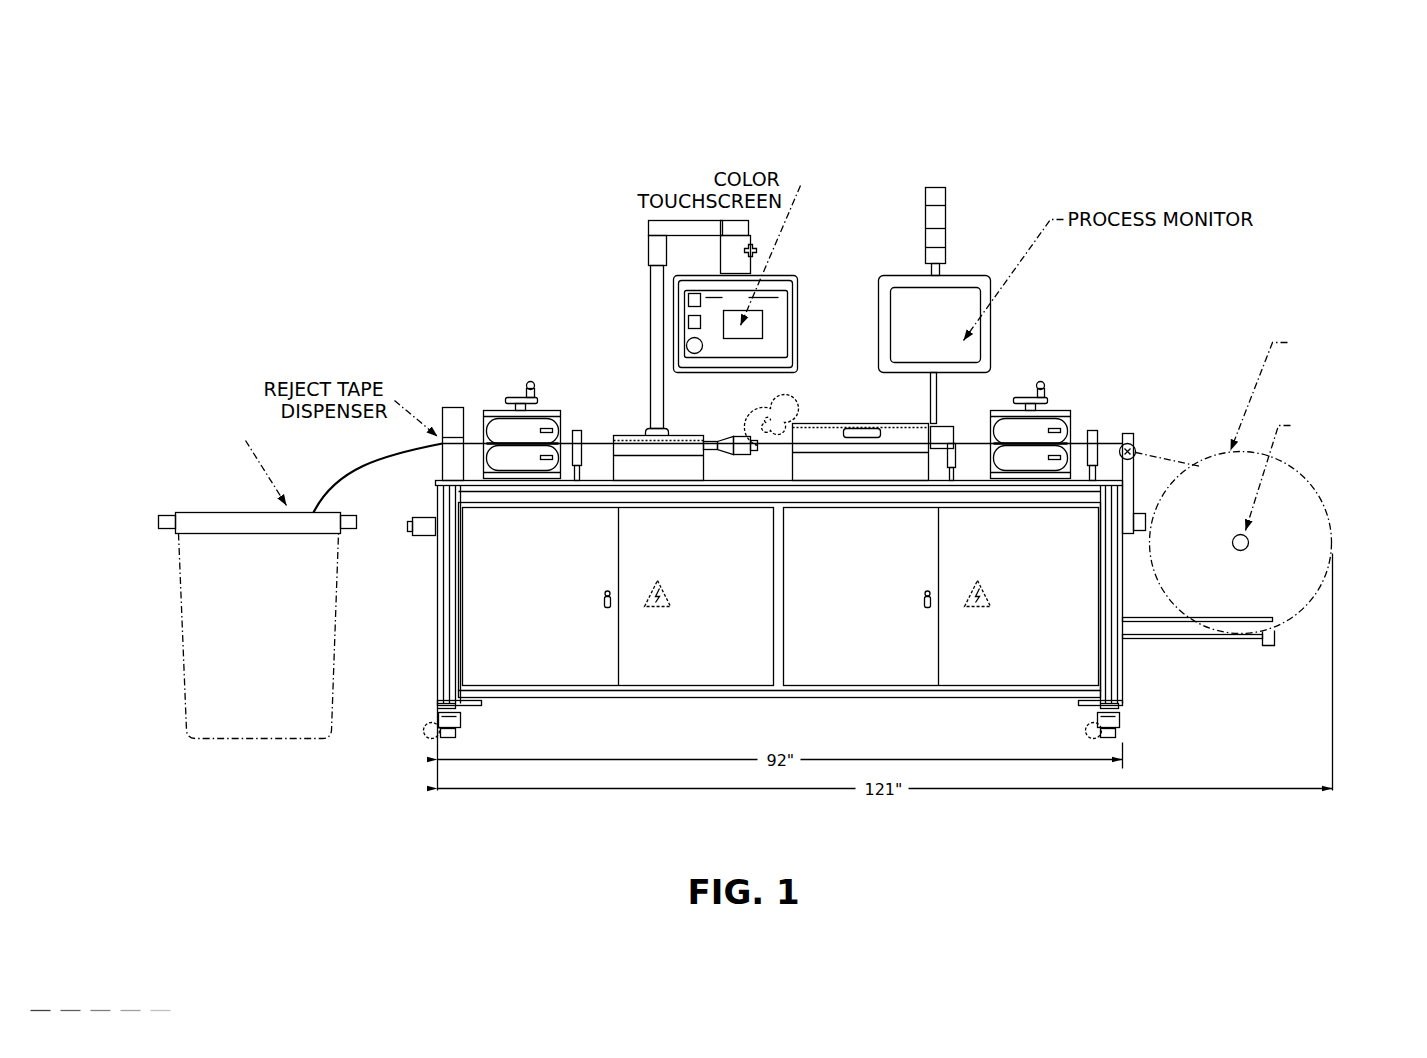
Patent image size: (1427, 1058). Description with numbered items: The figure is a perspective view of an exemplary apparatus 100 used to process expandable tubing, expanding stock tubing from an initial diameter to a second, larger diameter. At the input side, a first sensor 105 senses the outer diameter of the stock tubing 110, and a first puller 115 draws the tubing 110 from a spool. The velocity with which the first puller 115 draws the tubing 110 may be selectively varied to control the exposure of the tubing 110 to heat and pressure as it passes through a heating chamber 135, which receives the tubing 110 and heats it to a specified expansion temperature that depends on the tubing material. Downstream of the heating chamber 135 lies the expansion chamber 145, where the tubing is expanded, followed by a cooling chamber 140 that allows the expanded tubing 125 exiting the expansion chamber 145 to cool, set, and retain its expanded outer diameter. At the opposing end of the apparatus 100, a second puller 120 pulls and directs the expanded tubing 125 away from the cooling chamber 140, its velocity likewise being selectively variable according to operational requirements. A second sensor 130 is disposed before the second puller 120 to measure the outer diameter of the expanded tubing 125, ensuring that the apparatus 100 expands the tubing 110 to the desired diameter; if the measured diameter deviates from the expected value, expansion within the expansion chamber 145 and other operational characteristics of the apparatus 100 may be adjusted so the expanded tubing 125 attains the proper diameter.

The apparatus 100 is at (1197, 128).
The first sensor 105 is at (1098, 423).
The tubing 110 is at (1153, 447).
The first puller 115 is at (1053, 392).
The second puller 120 is at (514, 386).
The expanded tubing 125 is at (325, 487).
The second sensor 130 is at (575, 419).
The heating chamber 135 is at (865, 418).
The cooling chamber 140 is at (624, 421).
The expansion chamber 145 is at (717, 433).